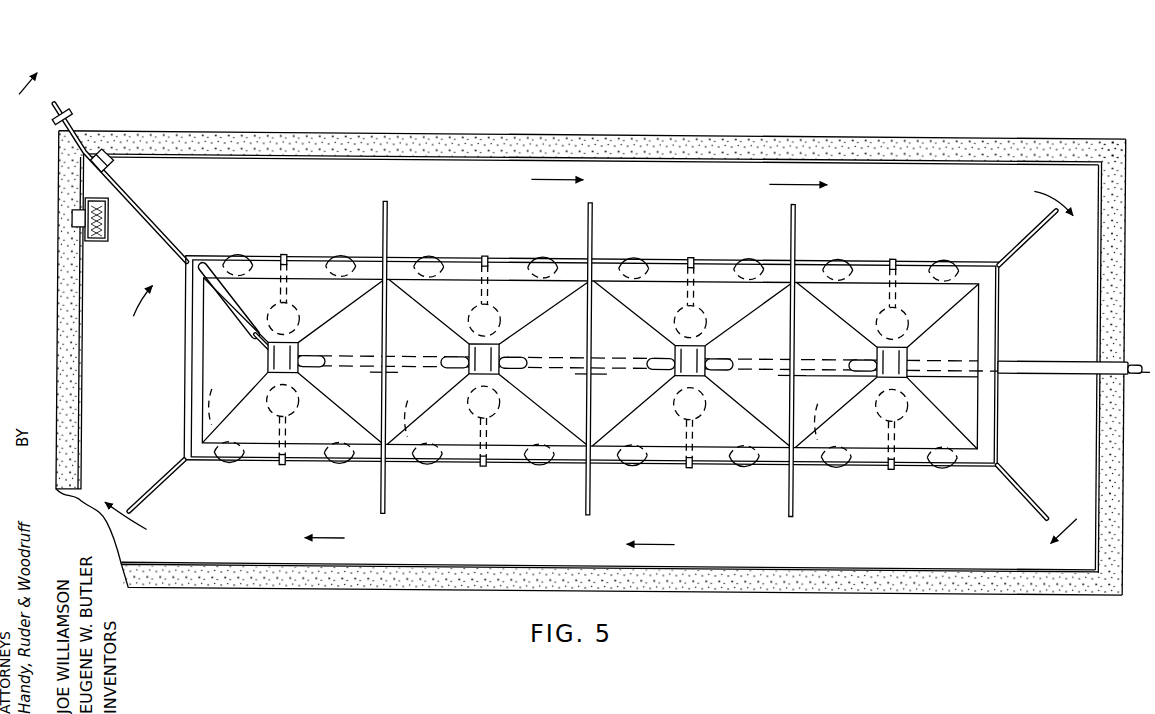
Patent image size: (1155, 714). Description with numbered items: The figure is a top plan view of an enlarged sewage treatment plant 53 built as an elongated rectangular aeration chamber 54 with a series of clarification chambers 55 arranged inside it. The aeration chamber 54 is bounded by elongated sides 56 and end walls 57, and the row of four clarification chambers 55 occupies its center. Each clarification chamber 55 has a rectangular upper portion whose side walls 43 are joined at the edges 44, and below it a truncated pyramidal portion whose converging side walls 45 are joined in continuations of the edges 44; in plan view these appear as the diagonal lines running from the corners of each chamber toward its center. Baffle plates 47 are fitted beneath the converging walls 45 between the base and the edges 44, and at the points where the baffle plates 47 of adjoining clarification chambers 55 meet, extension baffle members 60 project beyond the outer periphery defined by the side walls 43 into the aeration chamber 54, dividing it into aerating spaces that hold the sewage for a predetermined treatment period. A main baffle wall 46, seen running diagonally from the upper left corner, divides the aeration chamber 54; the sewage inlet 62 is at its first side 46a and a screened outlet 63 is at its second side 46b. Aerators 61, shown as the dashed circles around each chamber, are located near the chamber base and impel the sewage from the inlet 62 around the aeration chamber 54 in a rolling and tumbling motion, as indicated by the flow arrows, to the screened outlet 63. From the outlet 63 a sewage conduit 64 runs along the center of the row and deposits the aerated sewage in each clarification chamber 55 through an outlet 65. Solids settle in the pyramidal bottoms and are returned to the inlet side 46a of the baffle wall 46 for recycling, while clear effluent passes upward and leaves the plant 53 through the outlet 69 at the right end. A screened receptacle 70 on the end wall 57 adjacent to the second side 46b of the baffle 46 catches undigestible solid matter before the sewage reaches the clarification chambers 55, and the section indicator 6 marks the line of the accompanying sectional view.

The section line / drive direction 6 is at (586, 202).
The side walls 43 is at (310, 256).
The edges 44 is at (382, 262).
The converging side walls 45 is at (420, 391).
The main baffle wall 46 is at (161, 219).
The first side of the baffle wall 46a is at (150, 228).
The second side of the baffle wall 46b is at (152, 240).
The baffle plates 47 is at (540, 427).
The plant 53 is at (852, 83).
The aeration chamber 54 is at (818, 496).
The clarification chambers 55 is at (333, 300).
The elongated sides 56 is at (622, 135).
The end walls 57 is at (80, 331).
The extension baffle members 60 is at (386, 226).
The aerators 61 is at (240, 250).
The sewage inlet 62 is at (74, 122).
The screened outlet 63 is at (176, 270).
The sewage conduit 64 is at (326, 360).
The outlet 65 is at (268, 360).
The outlet 69 is at (1056, 360).
The screened receptacle 70 is at (84, 208).